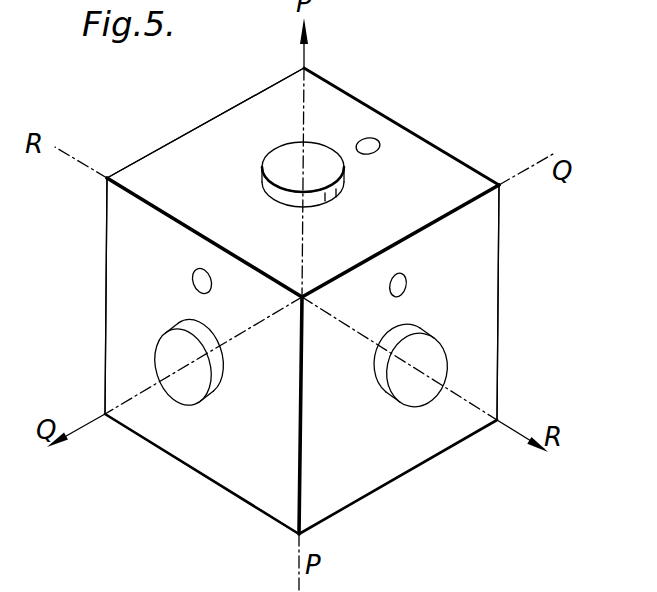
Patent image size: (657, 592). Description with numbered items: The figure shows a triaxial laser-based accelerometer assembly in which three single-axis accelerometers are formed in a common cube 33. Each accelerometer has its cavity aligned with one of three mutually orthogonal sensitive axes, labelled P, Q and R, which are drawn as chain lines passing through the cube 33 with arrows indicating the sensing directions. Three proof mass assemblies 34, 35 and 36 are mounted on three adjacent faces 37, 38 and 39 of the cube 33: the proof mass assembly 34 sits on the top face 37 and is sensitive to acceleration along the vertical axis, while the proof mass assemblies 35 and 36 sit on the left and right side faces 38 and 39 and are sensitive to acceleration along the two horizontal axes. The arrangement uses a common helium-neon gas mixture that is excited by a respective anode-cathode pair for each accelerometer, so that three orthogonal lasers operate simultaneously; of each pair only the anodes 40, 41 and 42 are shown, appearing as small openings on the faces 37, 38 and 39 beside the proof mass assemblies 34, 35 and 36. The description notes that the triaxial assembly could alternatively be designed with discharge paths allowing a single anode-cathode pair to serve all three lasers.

The cube 33 is at (460, 158).
The proof mass assembly 34 is at (315, 153).
The proof mass assembly 35 is at (180, 353).
The proof mass assembly 36 is at (402, 390).
The face 37 is at (187, 157).
The face 38 is at (205, 443).
The face 39 is at (473, 382).
The anode 40 is at (370, 143).
The anode 41 is at (190, 277).
The anode 42 is at (408, 278).